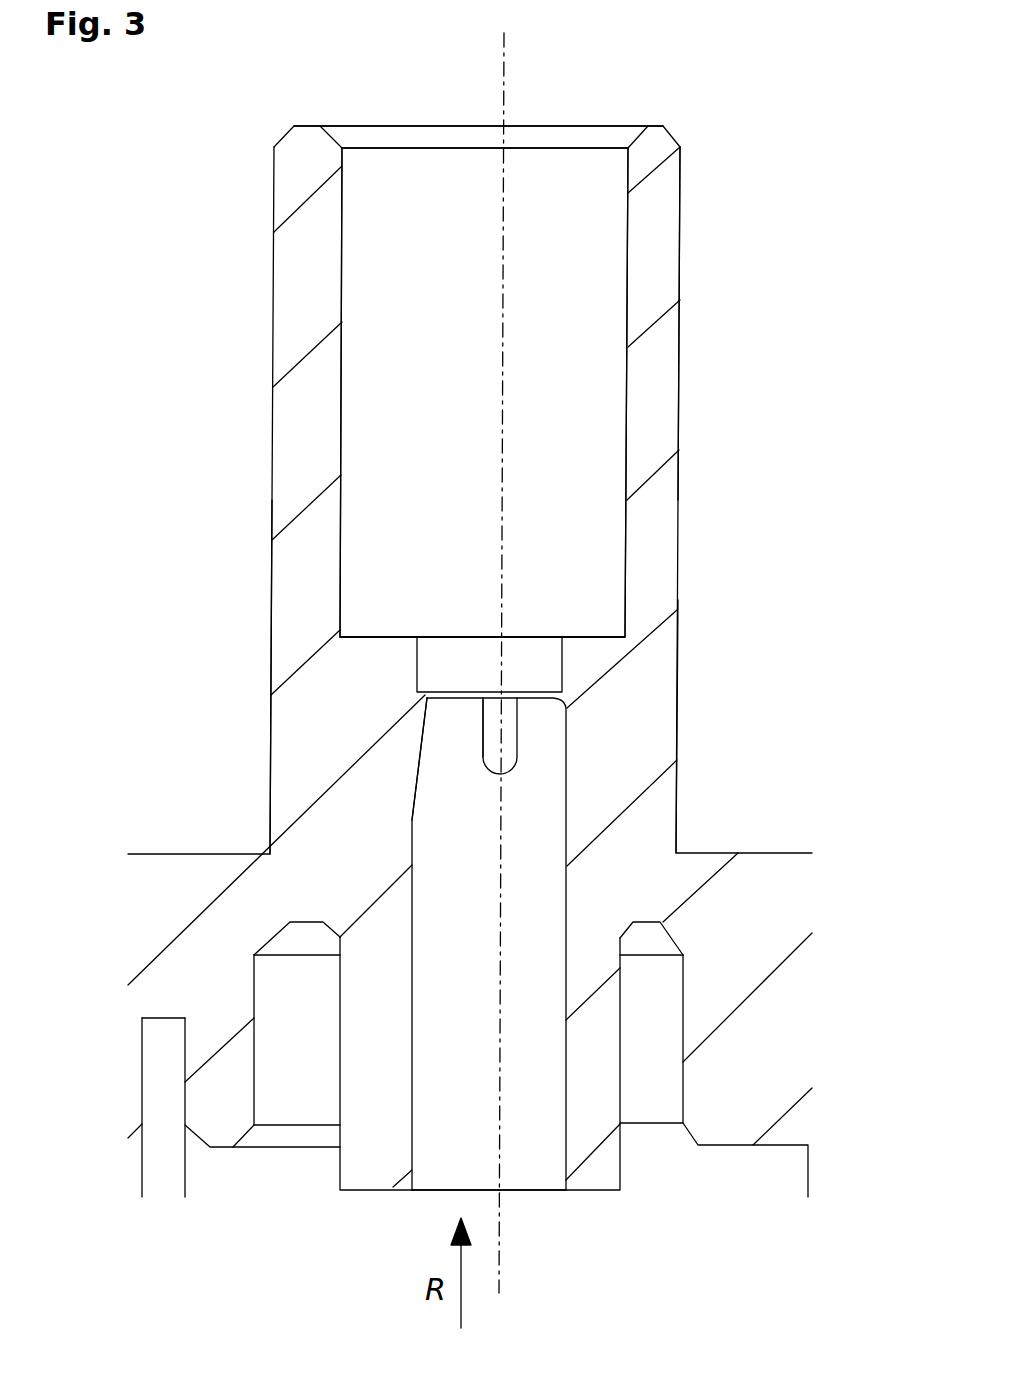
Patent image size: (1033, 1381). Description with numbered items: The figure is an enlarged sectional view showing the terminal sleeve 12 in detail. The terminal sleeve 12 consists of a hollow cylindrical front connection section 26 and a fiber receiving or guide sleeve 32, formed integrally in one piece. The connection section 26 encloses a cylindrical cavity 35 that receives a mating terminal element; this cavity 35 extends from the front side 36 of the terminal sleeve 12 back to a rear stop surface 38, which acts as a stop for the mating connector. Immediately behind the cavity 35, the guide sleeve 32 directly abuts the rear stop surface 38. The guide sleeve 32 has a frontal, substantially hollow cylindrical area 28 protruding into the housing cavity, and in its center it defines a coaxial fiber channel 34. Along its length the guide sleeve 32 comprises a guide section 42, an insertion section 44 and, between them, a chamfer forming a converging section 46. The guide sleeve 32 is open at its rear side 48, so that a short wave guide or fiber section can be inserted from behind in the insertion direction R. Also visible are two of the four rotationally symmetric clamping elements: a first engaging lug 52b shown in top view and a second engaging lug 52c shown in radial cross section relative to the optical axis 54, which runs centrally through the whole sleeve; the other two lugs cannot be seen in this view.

The terminal sleeve 12 is at (680, 207).
The connection section 26 is at (679, 415).
The hollow cylindrical area 28 is at (270, 733).
The guide sleeve 32 is at (677, 735).
The fiber channel 34 is at (470, 1141).
The cavity 35 is at (457, 386).
The front side 36 is at (652, 123).
The rear stop surface 38 is at (585, 637).
The guide section 42 is at (420, 662).
The insertion section 44 is at (412, 906).
The converging section 46 is at (550, 712).
The rear side 48 is at (592, 1190).
The engaging lug 52b is at (482, 750).
The engaging lug 52c is at (423, 727).
The optical axis 54 is at (505, 60).